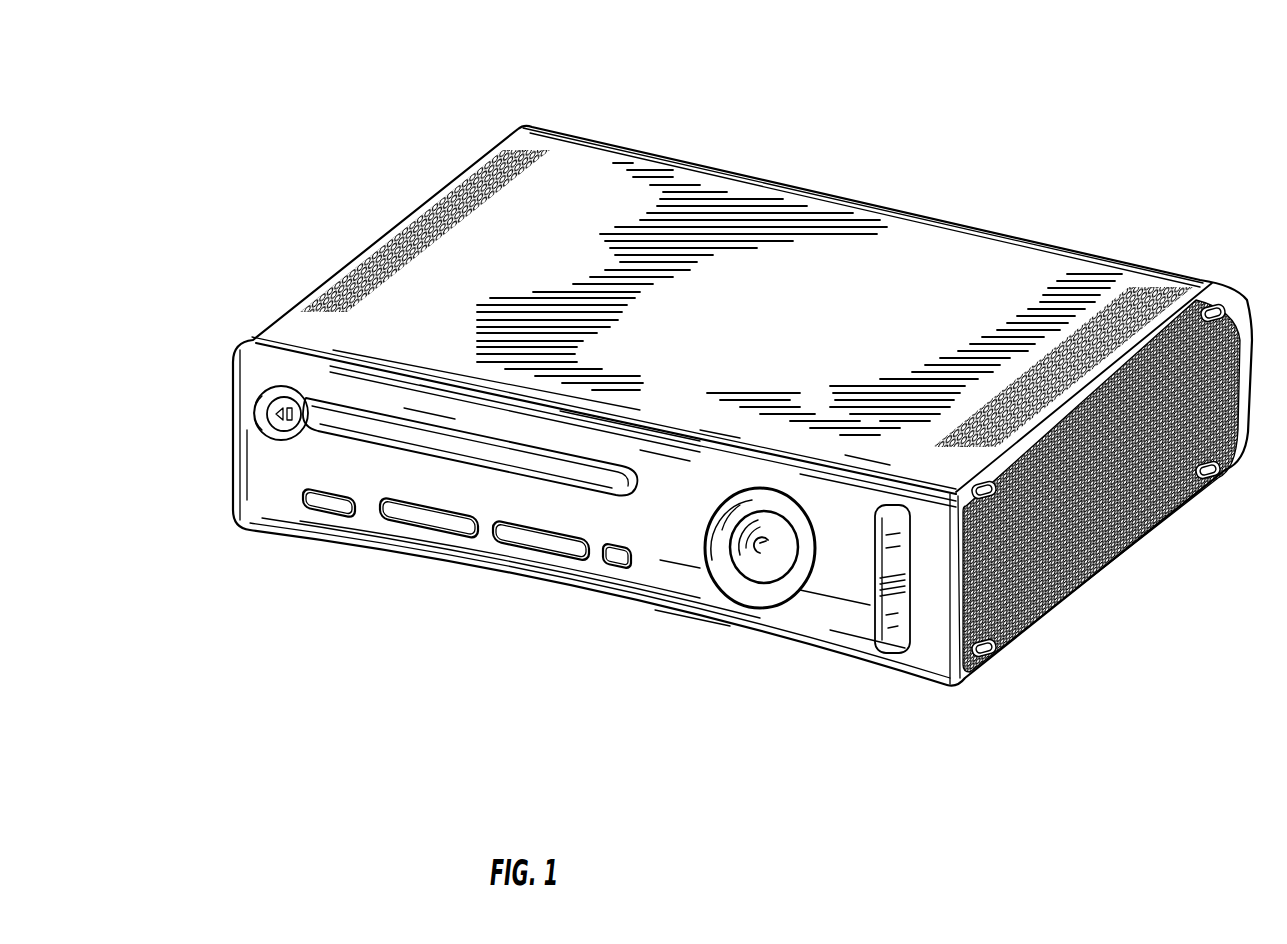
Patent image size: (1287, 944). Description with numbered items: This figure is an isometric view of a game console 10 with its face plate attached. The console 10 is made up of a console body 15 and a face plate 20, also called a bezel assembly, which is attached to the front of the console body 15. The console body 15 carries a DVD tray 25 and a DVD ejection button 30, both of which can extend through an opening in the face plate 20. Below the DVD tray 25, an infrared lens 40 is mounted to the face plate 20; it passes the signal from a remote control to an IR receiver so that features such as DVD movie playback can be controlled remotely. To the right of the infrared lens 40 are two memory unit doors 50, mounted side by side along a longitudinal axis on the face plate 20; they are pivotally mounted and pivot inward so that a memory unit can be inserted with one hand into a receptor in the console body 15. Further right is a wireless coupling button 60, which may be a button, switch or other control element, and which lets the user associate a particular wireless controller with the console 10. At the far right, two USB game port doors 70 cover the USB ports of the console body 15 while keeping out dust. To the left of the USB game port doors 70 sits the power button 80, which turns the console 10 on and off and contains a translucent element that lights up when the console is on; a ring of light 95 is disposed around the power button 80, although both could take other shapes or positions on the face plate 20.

The console 10 is at (716, 134).
The console body 15 is at (603, 168).
The face plate 20 is at (228, 493).
The DVD tray 25 is at (350, 428).
The DVD ejection button 30 is at (268, 408).
The infrared lens 40 is at (310, 498).
The memory unit doors 50 is at (424, 517).
The wireless coupling button 60 is at (613, 558).
The USB game port doors 70 is at (893, 640).
The power button 80 is at (772, 560).
The ring of light 95 is at (777, 513).